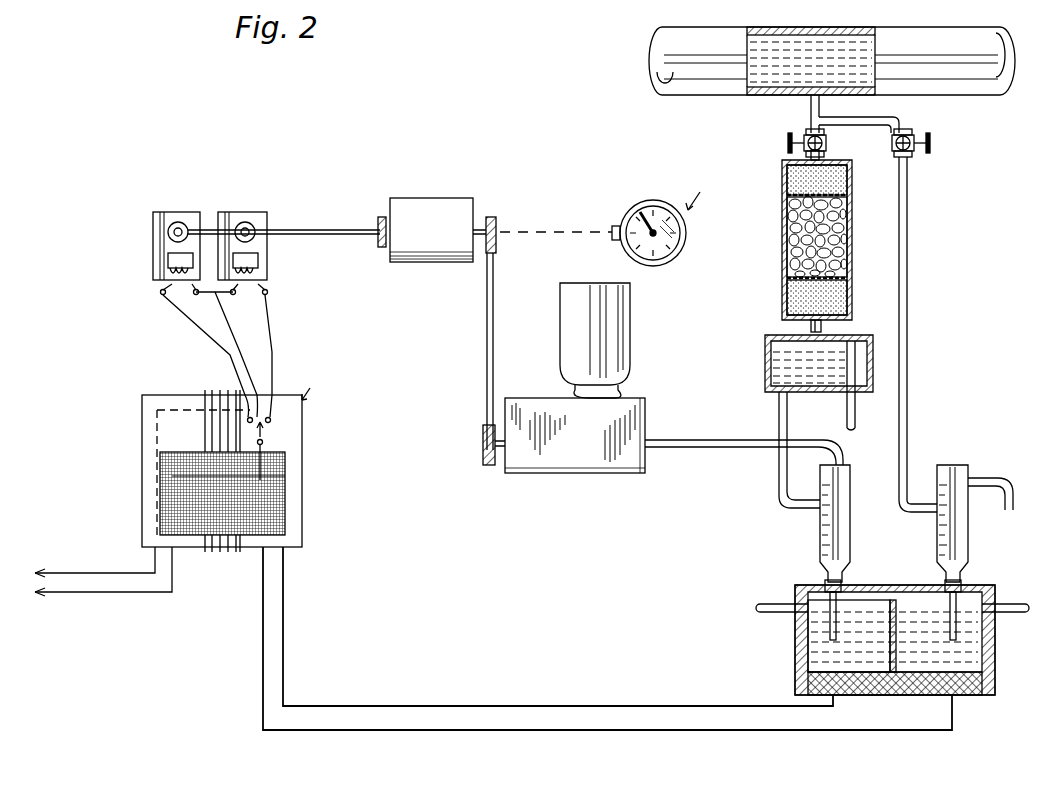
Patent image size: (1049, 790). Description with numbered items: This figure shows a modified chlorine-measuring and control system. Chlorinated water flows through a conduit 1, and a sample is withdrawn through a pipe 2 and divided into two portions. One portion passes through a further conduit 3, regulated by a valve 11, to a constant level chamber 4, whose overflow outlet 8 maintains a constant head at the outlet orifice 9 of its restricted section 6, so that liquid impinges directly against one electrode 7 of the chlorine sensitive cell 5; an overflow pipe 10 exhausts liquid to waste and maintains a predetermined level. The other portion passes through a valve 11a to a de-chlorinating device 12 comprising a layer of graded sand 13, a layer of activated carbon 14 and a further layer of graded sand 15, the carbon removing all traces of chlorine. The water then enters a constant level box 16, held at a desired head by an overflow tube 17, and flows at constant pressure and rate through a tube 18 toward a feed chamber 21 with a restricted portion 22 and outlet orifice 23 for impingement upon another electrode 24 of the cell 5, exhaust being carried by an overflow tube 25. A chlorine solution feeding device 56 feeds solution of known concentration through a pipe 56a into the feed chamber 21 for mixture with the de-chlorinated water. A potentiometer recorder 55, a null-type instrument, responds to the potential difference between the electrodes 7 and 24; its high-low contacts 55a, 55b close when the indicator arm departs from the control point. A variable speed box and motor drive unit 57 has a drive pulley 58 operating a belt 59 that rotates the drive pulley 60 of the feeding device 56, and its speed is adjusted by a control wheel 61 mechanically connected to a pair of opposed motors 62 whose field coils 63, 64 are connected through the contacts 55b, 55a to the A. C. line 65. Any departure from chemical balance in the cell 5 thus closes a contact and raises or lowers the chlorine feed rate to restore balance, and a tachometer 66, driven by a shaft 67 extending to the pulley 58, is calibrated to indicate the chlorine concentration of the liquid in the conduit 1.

The conduit 1 is at (944, 32).
The pipe 2 is at (822, 106).
The further conduit 3 is at (908, 245).
The constant level chamber 4 is at (968, 540).
The chlorine sensitive cell 5 is at (995, 665).
The restricted section 6 is at (965, 590).
The electrode 7 is at (963, 696).
The overflow outlet 8 is at (1002, 497).
The outlet orifice 9 is at (960, 646).
The overflow pipe 10 is at (1018, 604).
The valve 11 is at (897, 152).
The valve 11a is at (827, 145).
The de-chlorinating device 12 is at (852, 215).
The layer of graded sand 13 is at (782, 170).
The layer of activated carbon 14 is at (852, 242).
The further layer of graded sand 15 is at (848, 294).
The constant level box 16 is at (876, 352).
The overflow tube 17 is at (856, 415).
The tube 18 is at (779, 418).
The feed chamber 21 is at (850, 492).
The restricted portion 22 is at (843, 592).
The outlet orifice 23 is at (808, 648).
The electrode 24 is at (840, 683).
The overflow tube 25 is at (768, 600).
The potentiometer recorder 55 is at (298, 412).
The high-low contact 55a is at (272, 425).
The high-low contact 55b is at (268, 444).
The chlorine solution feeding device 56 is at (640, 398).
The pipe 56a is at (714, 432).
The variable speed box and motor drive unit 57 is at (446, 198).
The drive pulley 58 is at (497, 220).
The belt 59 is at (487, 340).
The drive pulley 60 is at (483, 443).
The control wheel 61 is at (378, 216).
The opposed motors 62 is at (228, 212).
The field coil 63 is at (160, 296).
The field coil 64 is at (268, 292).
The A. C. line 65 is at (46, 582).
The tachometer 66 is at (687, 242).
The shaft 67 is at (527, 238).